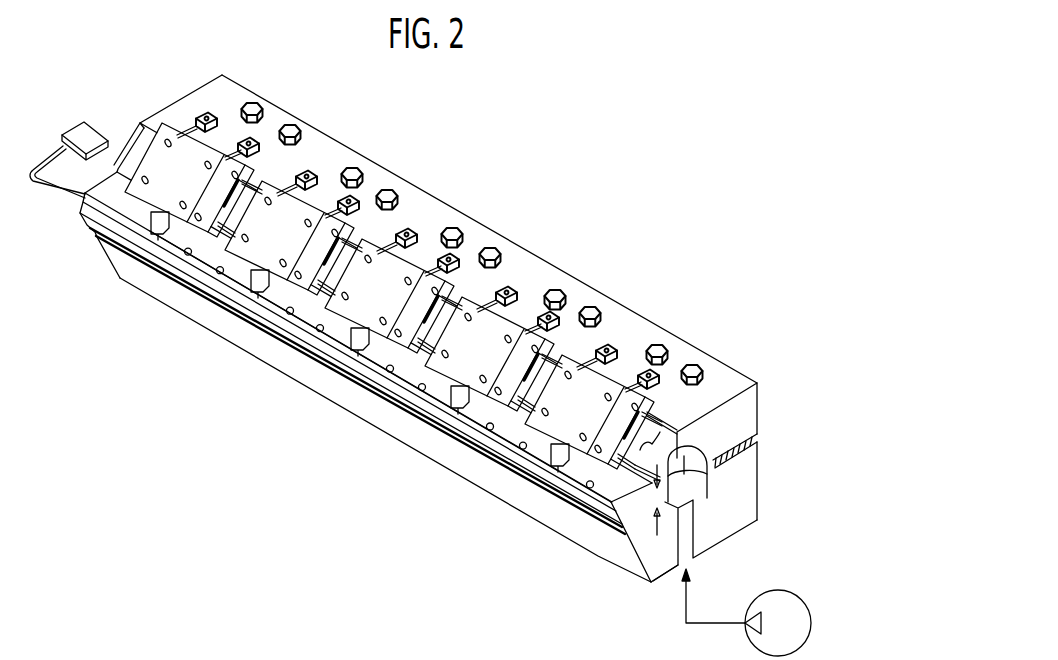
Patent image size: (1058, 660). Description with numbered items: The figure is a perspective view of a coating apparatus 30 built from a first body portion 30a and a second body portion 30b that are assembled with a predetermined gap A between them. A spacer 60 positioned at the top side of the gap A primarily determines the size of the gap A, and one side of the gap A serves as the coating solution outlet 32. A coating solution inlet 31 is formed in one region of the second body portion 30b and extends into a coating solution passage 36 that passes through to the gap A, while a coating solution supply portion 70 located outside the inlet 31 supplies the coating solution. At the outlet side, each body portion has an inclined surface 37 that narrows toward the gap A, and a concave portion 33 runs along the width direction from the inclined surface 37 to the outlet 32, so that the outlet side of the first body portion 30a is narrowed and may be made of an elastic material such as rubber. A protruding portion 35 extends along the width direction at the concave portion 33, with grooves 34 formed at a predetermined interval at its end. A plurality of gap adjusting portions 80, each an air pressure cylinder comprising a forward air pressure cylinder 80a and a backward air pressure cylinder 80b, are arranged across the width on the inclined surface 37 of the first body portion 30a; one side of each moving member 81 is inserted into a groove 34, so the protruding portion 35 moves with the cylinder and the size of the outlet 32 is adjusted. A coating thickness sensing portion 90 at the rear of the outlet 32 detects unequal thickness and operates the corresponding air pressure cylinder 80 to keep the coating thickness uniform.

The coating apparatus 30 is at (577, 204).
The first body portion 30a is at (757, 418).
The second body portion 30b is at (757, 485).
The coating solution inlet 31 is at (680, 573).
The coating solution outlet 32 is at (607, 520).
The concave portion 33 is at (630, 530).
The grooves 34 is at (577, 478).
The protruding portion 35 is at (500, 437).
The coating solution passage 36 is at (688, 537).
The inclined surface 37 is at (668, 412).
The spacer 60 is at (757, 440).
The coating solution supply portion 70 is at (811, 614).
The gap adjusting portion 80 is at (580, 372).
The forward air pressure cylinder 80a is at (607, 356).
The backward air pressure cylinder 80b is at (650, 443).
The moving member 81 is at (545, 482).
The coating thickness sensing portion 90 is at (88, 138).
The gap A is at (712, 490).